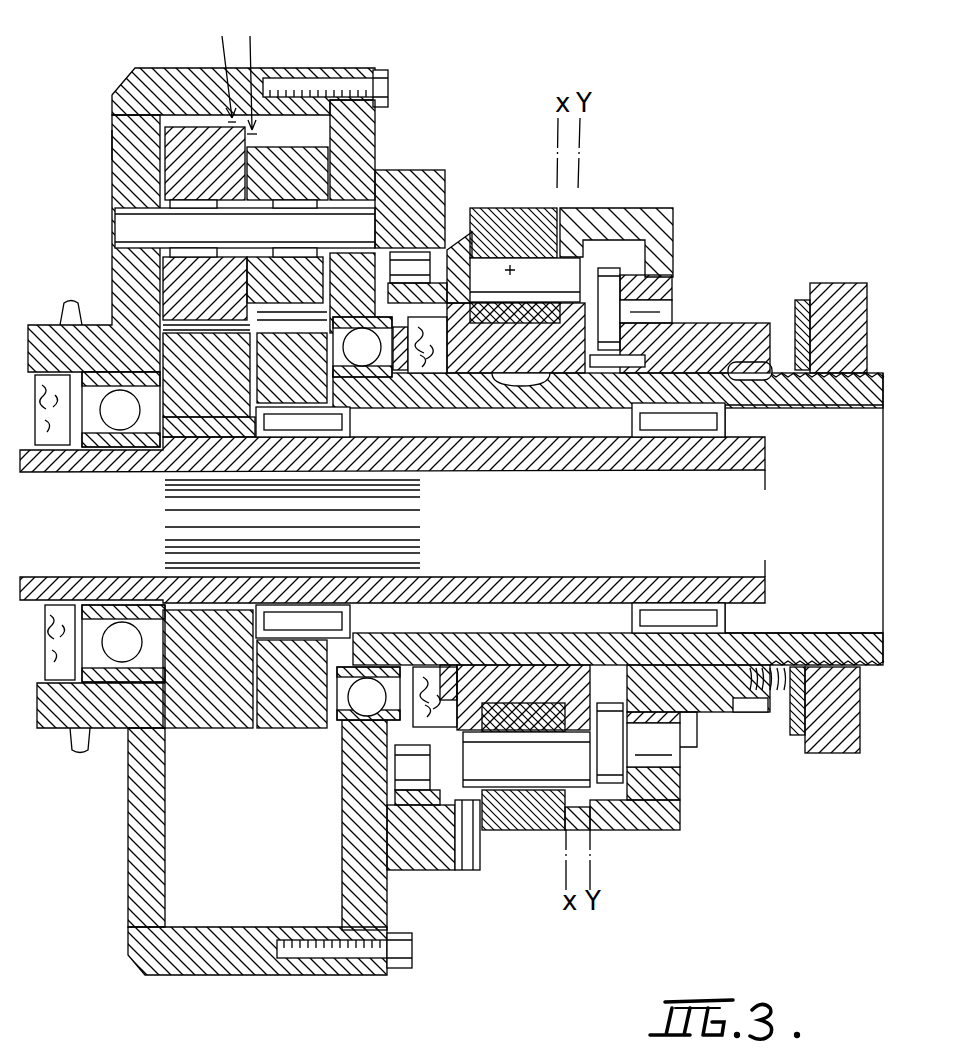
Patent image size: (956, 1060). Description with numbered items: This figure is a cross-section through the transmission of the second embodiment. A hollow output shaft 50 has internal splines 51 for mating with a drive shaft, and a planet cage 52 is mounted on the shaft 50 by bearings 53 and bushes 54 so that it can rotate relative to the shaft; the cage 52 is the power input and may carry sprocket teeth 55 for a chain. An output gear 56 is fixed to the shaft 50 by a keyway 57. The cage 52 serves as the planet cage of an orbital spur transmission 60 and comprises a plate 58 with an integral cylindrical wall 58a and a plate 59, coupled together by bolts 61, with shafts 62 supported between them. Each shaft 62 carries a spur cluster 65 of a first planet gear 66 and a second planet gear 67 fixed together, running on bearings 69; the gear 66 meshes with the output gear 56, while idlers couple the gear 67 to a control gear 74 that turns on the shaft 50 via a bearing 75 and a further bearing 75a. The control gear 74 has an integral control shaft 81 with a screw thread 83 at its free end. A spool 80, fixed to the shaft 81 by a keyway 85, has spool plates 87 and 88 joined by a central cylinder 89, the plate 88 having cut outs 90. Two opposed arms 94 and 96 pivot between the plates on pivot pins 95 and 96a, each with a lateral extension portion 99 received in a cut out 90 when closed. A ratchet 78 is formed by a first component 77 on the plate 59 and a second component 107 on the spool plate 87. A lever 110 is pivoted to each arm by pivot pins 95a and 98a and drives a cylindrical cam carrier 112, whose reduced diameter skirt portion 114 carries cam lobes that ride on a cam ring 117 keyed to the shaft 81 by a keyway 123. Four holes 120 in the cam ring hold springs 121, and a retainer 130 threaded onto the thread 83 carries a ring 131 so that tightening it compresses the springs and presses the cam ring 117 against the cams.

The hollow output shaft 50 is at (88, 462).
The internal splines 51 is at (165, 553).
The planet cage 52 is at (103, 154).
The bearings 53 is at (170, 730).
The bushes 54 is at (50, 375).
The sprocket teeth 55 is at (68, 300).
The output gear 56 is at (218, 690).
The keyway 57 is at (170, 480).
The plate 58 is at (125, 192).
The cylindrical wall 58a is at (172, 85).
The plate 59 is at (360, 120).
The orbital spur transmission 60 is at (222, 63).
The bolts 61 is at (350, 85).
The shafts 62 is at (130, 230).
The spur cluster 65 is at (252, 69).
The first planet gear 66 is at (180, 150).
The second planet gear 67 is at (283, 165).
The bearings 69 is at (290, 250).
The control gear 74 is at (285, 700).
The bearing 75 is at (330, 620).
The needle bearing 75a is at (678, 615).
The first component of ratchet 77 is at (405, 185).
The ratchet 78 is at (460, 218).
The spool 80 is at (485, 605).
The control shaft 81 is at (557, 648).
The screw thread 83 is at (870, 390).
The keyway 85 is at (521, 388).
The spool plate 87 is at (465, 872).
The spool plate 88 is at (585, 830).
The central cylinder 89 is at (522, 690).
The cut outs 90 is at (680, 820).
The arm 94 is at (487, 218).
The pivot pin 95 is at (508, 270).
The pivot pin 95a is at (650, 300).
The arm 96 is at (505, 835).
The pivot pin 96a is at (535, 835).
The pivot pin 98a is at (665, 745).
The extension portion 99 is at (648, 218).
The second component of ratchet 107 is at (380, 815).
The lever 110 is at (607, 275).
The cylindrical cam carrier 112 is at (630, 360).
The skirt portion 114 is at (750, 712).
The cam ring 117 is at (745, 345).
The holes 120 is at (758, 668).
The springs 121 is at (780, 668).
The keyway 123 is at (790, 392).
The retainer 130 is at (840, 290).
The ring 131 is at (800, 300).